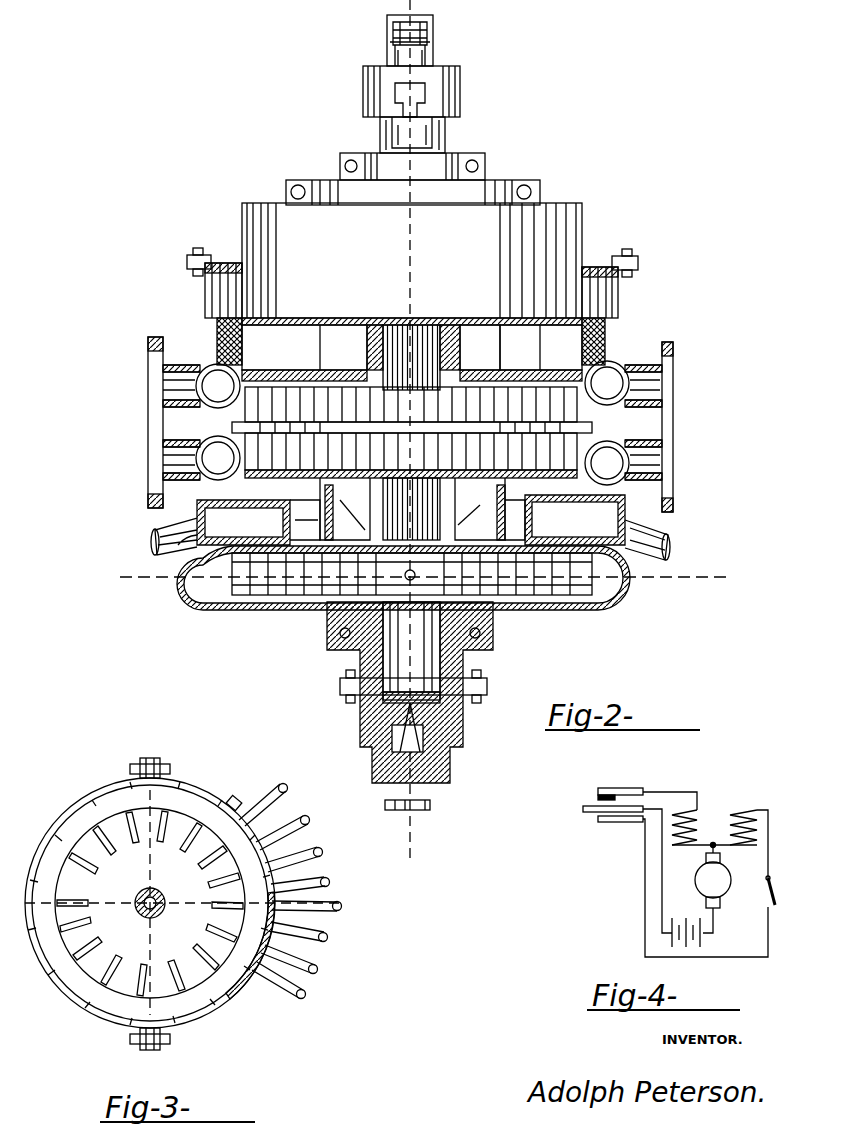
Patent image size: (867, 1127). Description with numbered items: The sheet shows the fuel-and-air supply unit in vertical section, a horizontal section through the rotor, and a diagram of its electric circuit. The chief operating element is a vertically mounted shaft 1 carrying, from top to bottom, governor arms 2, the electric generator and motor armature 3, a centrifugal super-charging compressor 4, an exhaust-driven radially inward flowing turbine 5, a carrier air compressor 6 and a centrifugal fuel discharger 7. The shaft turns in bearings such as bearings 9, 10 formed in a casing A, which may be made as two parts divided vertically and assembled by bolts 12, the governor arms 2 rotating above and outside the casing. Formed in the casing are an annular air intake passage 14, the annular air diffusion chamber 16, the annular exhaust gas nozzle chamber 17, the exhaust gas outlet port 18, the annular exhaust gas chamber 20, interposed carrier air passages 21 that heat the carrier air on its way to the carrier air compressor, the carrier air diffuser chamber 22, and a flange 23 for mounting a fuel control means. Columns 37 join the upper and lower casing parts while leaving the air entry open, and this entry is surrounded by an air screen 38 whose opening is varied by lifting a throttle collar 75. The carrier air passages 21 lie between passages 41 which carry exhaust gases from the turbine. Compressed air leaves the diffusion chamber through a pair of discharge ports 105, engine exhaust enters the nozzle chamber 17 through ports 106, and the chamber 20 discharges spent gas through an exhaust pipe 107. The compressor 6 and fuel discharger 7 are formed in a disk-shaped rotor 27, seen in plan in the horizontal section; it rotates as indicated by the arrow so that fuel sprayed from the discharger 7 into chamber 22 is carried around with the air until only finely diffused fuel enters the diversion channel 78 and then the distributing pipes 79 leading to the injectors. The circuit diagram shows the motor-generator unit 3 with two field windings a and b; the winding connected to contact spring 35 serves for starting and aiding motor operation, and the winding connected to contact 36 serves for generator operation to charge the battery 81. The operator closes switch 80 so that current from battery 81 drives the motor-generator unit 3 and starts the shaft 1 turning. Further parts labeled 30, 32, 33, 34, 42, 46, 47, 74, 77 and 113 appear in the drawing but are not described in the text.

In FIG. 2, the shaft 1 is at (424, 828).
In FIG. 3, the shaft 1 is at (360, 904).
In FIG. 2, the governor arms 2 is at (385, 132).
In FIG. 3, the governor arms 2 is at (146, 755).
In FIG. 2, the electric generator and motor armature (motor-generator unit) 3 is at (713, 577).
In FIG. 4, the electric generator and motor armature (motor-generator unit) 3 is at (713, 889).
In FIG. 2, the centrifugal super-charging compressor 4 is at (452, 398).
In FIG. 2, the exhaust driven radially inward flowing turbine 5 is at (454, 445).
In FIG. 2, the carrier air compressor 6 is at (555, 560).
In FIG. 3, the carrier air compressor 6 is at (105, 990).
In FIG. 2, the centrifugal fuel discharger 7 is at (322, 606).
In FIG. 3, the centrifugal fuel discharger 7 is at (102, 884).
In FIG. 2, the bearing 9 is at (462, 340).
In FIG. 2, the bearing 10 is at (434, 509).
In FIG. 2, the bolts 12 is at (530, 192).
In FIG. 2, the air intake passage 14 is at (521, 353).
In FIG. 2, the annular air diffusion chamber 16 is at (607, 383).
In FIG. 2, the annular exhaust gas nozzle chamber 17 is at (607, 463).
In FIG. 2, the exhaust gas outlet port 18 is at (480, 507).
In FIG. 2, the annular exhaust gas chamber 20 is at (411, 520).
In FIG. 2, the interposed carrier air passages 21 is at (305, 520).
In FIG. 2, the carrier air diffuser chamber 22 is at (650, 598).
In FIG. 3, the carrier air diffuser chamber 22 is at (70, 812).
In FIG. 2, the flange 23 is at (487, 681).
In FIG. 2, the disk-shaped rotor 27 is at (292, 612).
In FIG. 2, the T-slot 30 is at (394, 93).
In FIG. 2, the upper block 32 is at (461, 95).
In FIG. 2, the terminal post 33 is at (397, 60).
In FIG. 2, the contact bar 34 is at (436, 43).
In FIG. 4, the contact bar 34 is at (583, 809).
In FIG. 4, the contact spring 35 is at (620, 820).
In FIG. 2, the contact 36 is at (390, 17).
In FIG. 4, the contact 36 is at (608, 789).
In FIG. 2, the columns 37 is at (318, 340).
In FIG. 2, the air screen 38 is at (217, 332).
In FIG. 2, the passages 41 is at (315, 492).
In FIG. 3, the hub 42 is at (166, 898).
In FIG. 2, the pin 46 is at (424, 745).
In FIG. 2, the nut 47 is at (430, 806).
In FIG. 2, the bracket 74 is at (187, 260).
In FIG. 2, the throttle collar 75 is at (619, 296).
In FIG. 3, the ring segment 77 is at (250, 998).
In FIG. 3, the diversion channel 78 is at (238, 800).
In FIG. 3, the distributing pipes 79 is at (282, 786).
In FIG. 4, the switch 80 is at (751, 895).
In FIG. 4, the battery 81 is at (712, 935).
In FIG. 2, the discharge ports 105 is at (150, 388).
In FIG. 2, the ports 106 is at (150, 459).
In FIG. 2, the exhaust pipe 107 is at (150, 530).
In FIG. 2, the pipe flange 113 is at (150, 338).
In FIG. 2, the casing A is at (584, 244).
In FIG. 4, the field winding a is at (735, 810).
In FIG. 4, the field winding b is at (695, 815).